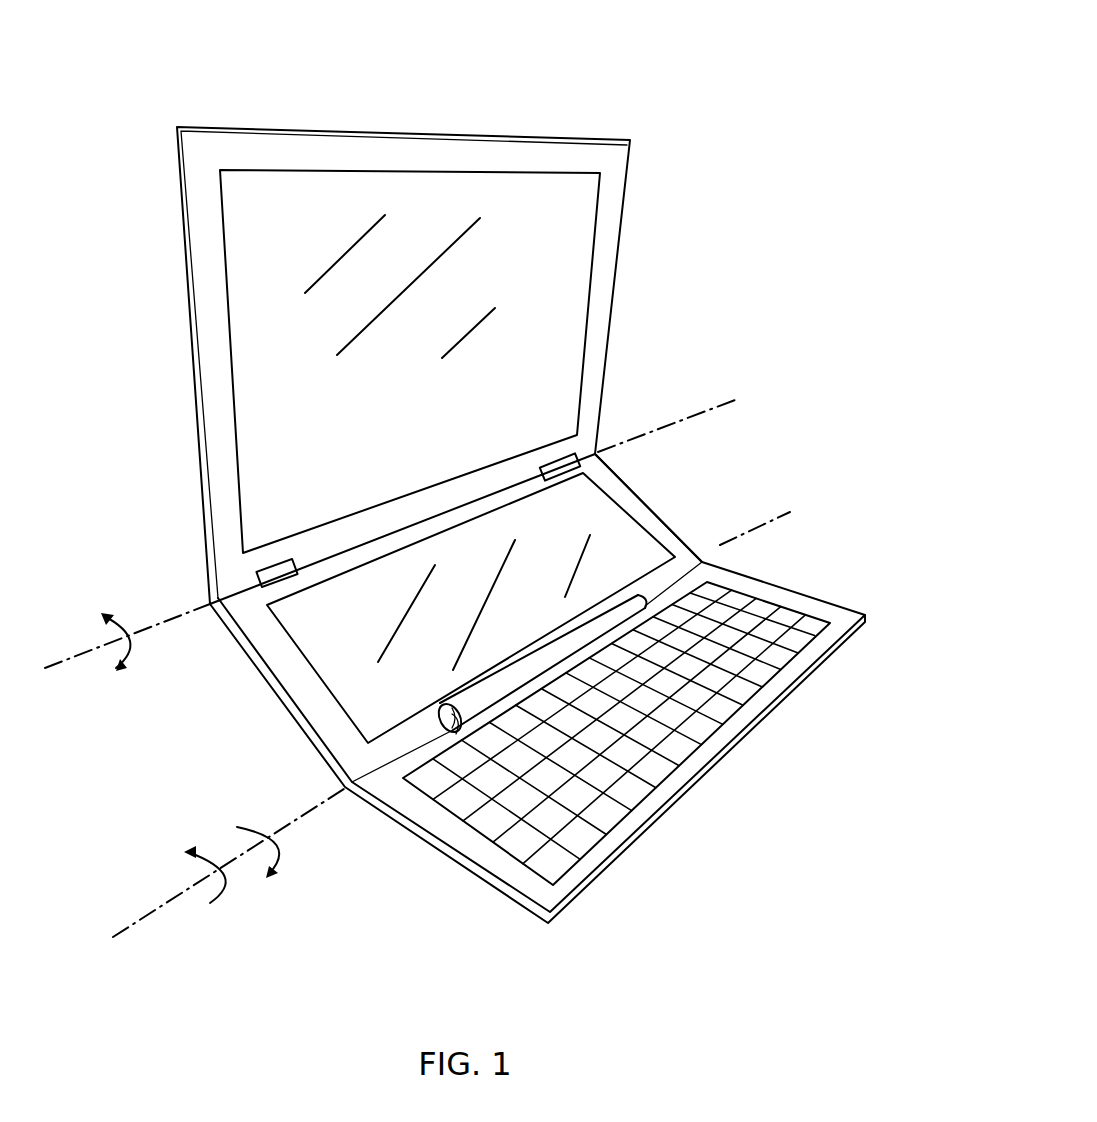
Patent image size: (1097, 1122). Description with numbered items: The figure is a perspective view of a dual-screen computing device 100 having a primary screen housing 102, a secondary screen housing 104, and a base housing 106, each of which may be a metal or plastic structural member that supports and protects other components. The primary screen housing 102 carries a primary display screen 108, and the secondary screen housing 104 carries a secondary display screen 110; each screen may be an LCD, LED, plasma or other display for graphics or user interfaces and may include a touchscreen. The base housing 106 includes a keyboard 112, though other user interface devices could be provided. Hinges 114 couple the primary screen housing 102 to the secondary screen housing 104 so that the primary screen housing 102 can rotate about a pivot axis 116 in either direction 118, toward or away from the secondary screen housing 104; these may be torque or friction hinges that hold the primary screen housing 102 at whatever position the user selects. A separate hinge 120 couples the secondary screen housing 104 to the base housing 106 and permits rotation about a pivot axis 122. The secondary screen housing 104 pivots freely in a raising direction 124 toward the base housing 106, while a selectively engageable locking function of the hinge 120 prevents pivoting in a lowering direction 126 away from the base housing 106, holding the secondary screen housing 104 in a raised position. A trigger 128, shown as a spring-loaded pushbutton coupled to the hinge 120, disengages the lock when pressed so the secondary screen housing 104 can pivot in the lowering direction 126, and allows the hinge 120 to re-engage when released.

The computing device 100 is at (903, 104).
The primary screen housing 102 is at (618, 163).
The secondary screen housing 104 is at (625, 505).
The base housing 106 is at (787, 600).
The primary display screen 108 is at (570, 245).
The secondary display screen 110 is at (625, 552).
The keyboard 112 is at (778, 648).
The hinges 114 is at (545, 474).
The pivot axis 116 is at (183, 619).
The direction 118 is at (128, 637).
The hinge 120 is at (549, 660).
The pivot axis 122 is at (330, 803).
The raising direction 124 is at (280, 863).
The lowering direction 126 is at (205, 852).
The trigger 128 is at (457, 737).